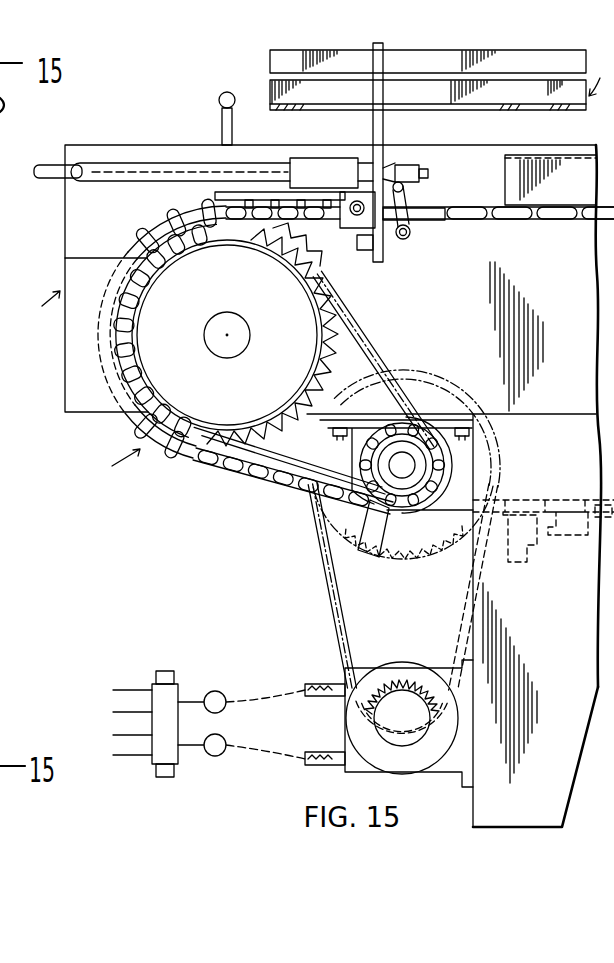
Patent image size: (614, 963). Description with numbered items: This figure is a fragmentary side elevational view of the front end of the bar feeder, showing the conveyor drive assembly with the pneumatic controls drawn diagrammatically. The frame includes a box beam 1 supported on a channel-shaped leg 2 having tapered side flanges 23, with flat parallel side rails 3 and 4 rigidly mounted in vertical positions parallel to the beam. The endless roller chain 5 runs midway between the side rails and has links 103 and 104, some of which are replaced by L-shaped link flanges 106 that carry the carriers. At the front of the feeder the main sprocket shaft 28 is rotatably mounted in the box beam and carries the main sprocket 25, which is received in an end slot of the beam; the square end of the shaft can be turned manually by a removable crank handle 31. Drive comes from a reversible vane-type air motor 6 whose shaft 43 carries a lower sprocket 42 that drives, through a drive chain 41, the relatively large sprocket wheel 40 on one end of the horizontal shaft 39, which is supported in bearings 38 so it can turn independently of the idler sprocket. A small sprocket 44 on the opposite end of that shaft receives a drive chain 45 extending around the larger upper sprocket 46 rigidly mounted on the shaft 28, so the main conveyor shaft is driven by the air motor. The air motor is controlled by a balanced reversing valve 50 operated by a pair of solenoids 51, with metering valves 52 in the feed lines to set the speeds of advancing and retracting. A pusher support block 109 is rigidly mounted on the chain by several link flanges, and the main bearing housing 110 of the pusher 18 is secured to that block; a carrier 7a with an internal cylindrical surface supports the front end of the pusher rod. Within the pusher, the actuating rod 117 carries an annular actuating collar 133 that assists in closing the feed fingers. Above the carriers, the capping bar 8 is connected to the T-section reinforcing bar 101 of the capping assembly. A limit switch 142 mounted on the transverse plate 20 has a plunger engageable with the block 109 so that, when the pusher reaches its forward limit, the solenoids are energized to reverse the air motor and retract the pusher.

The box beam 1 is at (72, 350).
The leg 2 is at (583, 701).
The side rail 3 is at (72, 213).
The side rail 4 is at (506, 186).
The roller chain 5 is at (540, 505).
The air motor 6 is at (428, 668).
The carrier 7a is at (370, 556).
The capping bar 8 is at (533, 97).
The pusher 18 is at (143, 160).
The transverse plate 20 is at (384, 128).
The side flange 23 is at (562, 814).
The main sprocket 25 is at (323, 244).
The main sprocket shaft 28 is at (218, 328).
The crank handle 31 is at (220, 120).
The bearing 38 is at (352, 460).
The horizontal shaft 39 is at (395, 474).
The sprocket wheel 40 is at (425, 560).
The drive chain 41 is at (318, 588).
The lower sprocket 42 is at (389, 668).
The shaft 43 is at (388, 728).
The small sprocket 44 is at (395, 423).
The drive chain 45 is at (355, 308).
The upper sprocket 46 is at (157, 290).
The reversing valve 50 is at (182, 753).
The solenoid 51 is at (159, 676).
The metering valve 52 is at (227, 690).
The reinforcing bar 101 is at (272, 58).
The link 103 is at (187, 217).
The link 104 is at (268, 478).
The link flange 106 is at (277, 212).
The pusher support block 109 is at (248, 192).
The main bearing housing 110 is at (330, 158).
The actuating rod 117 is at (48, 167).
The actuating collar 133 is at (418, 168).
The limit switch 142 is at (392, 236).